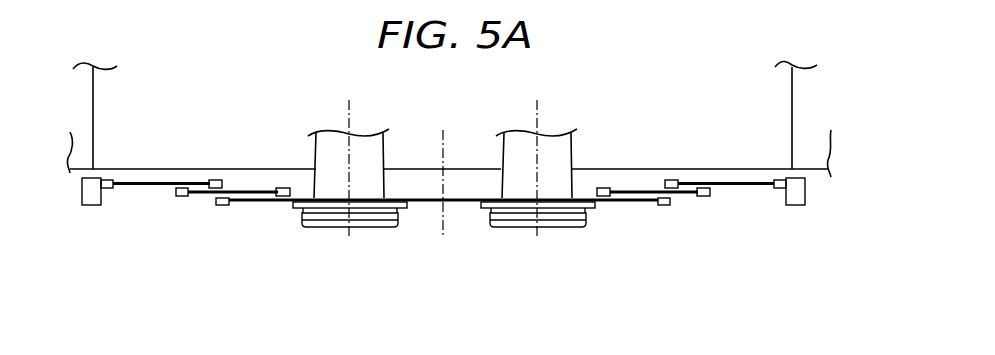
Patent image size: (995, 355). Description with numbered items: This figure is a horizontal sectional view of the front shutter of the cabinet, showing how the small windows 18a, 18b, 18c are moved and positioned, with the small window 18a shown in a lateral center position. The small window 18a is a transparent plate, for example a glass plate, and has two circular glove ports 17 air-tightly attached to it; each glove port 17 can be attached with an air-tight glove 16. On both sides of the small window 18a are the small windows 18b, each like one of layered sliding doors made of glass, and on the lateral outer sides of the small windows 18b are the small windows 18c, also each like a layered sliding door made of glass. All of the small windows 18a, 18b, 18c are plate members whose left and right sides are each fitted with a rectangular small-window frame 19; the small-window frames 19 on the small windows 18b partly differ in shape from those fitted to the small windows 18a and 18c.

The air-tight glove 16 is at (331, 129).
The glove port 17 is at (566, 227).
The small window 18a is at (420, 205).
The small window 18b is at (259, 188).
The small window 18c is at (138, 186).
The small-window frame 19 is at (215, 169).